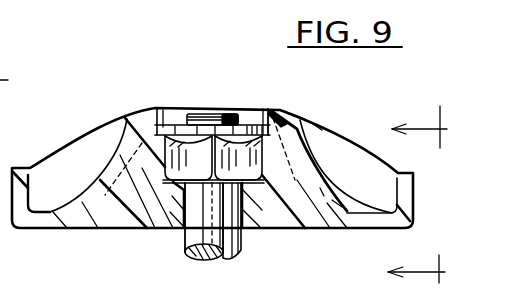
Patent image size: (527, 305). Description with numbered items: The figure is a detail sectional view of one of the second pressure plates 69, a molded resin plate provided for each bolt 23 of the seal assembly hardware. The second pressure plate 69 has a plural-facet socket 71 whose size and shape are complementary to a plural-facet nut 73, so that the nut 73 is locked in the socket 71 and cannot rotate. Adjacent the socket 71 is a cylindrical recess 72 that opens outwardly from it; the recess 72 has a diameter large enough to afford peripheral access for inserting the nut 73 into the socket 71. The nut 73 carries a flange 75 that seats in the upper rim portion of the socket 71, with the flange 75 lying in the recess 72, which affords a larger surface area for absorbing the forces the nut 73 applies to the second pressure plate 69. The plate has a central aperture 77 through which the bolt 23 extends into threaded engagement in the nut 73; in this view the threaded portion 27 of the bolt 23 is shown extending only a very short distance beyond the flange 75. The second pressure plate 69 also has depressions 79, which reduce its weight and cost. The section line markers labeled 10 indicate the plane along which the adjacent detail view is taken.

The second pressure plate 69 is at (108, 233).
The depressions 79 is at (62, 178).
The flange 75 is at (176, 130).
The threaded portion 27 is at (214, 123).
The recess 72 is at (262, 110).
The plural-facet socket 71 is at (284, 118).
The plural-facet nut 73 is at (180, 210).
The central aperture 77 is at (222, 257).
The bolt 23 is at (238, 243).
The section line 10- 10 is at (417, 201).